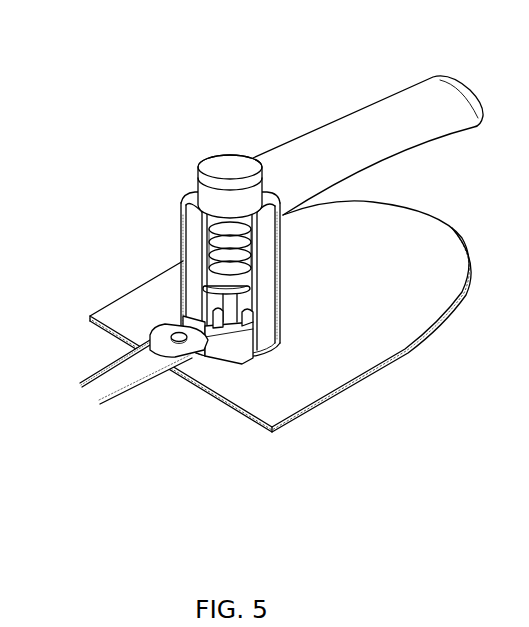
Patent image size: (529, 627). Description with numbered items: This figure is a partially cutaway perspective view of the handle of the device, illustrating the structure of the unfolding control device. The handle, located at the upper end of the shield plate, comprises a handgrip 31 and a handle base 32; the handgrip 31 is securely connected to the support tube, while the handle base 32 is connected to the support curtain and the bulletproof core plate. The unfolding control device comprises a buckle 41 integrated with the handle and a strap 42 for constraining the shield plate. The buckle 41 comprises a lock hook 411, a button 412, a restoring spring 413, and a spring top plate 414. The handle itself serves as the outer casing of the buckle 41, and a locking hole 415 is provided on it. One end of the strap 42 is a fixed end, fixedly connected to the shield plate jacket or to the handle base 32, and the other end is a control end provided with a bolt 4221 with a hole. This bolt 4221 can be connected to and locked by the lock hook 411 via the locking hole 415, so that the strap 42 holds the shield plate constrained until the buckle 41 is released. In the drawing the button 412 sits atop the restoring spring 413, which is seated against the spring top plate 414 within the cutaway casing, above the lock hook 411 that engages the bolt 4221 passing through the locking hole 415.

The handgrip 31 is at (302, 157).
The handle base 32 is at (285, 378).
The buckle 41 is at (229, 275).
The lock hook 411 is at (217, 320).
The button 412 is at (218, 167).
The restoring spring 413 is at (213, 250).
The spring top plate 414 is at (237, 287).
The locking hole 415 is at (197, 327).
The strap 42 is at (120, 389).
The bolt 4221 is at (163, 333).